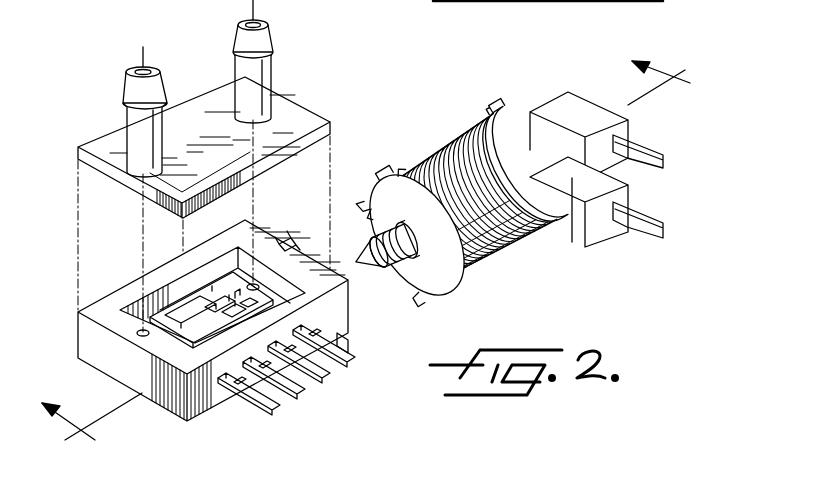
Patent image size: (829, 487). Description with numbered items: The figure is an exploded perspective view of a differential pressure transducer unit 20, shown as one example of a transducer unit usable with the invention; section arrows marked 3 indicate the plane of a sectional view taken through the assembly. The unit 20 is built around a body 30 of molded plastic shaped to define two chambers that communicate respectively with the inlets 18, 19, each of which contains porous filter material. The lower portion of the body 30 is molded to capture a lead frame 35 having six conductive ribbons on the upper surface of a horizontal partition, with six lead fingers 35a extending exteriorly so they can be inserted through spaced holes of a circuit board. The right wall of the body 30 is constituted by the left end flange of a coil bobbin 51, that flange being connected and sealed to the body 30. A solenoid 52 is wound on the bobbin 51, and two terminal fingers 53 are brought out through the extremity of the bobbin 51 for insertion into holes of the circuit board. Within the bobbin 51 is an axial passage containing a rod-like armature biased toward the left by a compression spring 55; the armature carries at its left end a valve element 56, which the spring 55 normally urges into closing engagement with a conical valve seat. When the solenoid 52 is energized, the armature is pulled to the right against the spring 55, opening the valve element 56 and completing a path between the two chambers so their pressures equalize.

The section line 3- 3 is at (376, 264).
The inlet 18 is at (268, 50).
The inlet 19 is at (132, 92).
The unit 20 is at (506, 204).
The body 30 is at (95, 362).
The lead frame 35 is at (158, 286).
The lead fingers 35a is at (255, 403).
The coil bobbin 51 is at (465, 280).
The solenoid 52 is at (517, 242).
The terminal fingers 53 is at (667, 160).
The compression spring 55 is at (372, 228).
The valve element 56 is at (378, 275).